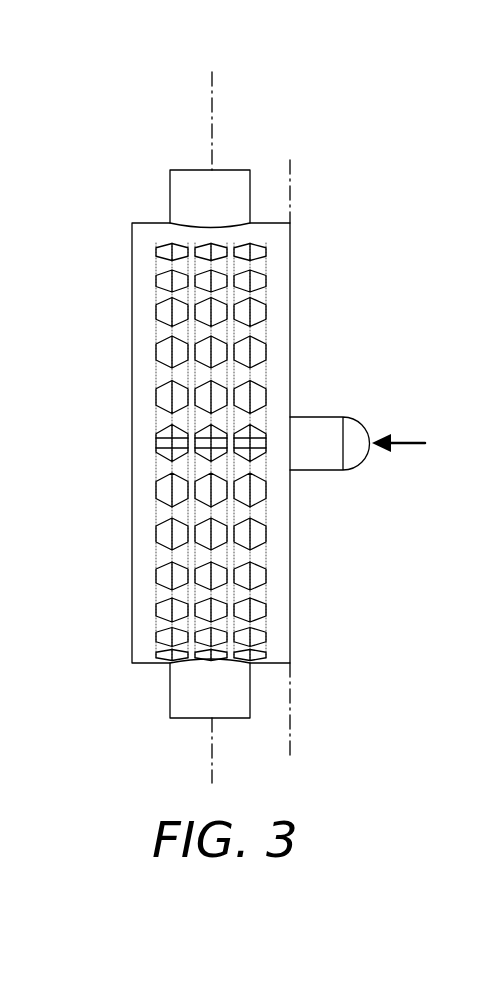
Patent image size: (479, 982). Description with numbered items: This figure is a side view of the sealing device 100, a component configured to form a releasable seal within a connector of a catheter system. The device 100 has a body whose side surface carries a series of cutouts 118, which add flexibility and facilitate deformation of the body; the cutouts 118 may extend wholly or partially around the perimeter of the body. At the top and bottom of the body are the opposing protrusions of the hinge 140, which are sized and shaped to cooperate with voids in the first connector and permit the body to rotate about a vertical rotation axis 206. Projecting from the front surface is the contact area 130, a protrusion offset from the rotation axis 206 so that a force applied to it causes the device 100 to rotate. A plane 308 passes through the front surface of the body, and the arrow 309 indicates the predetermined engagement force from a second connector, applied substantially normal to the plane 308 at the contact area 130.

The device 100 is at (120, 72).
The cutouts 118 is at (163, 312).
The contact area 130 is at (352, 463).
The hinge 140 is at (178, 187).
The rotation axis 206 is at (212, 125).
The plane 308 is at (290, 167).
The arrow 309 is at (412, 442).